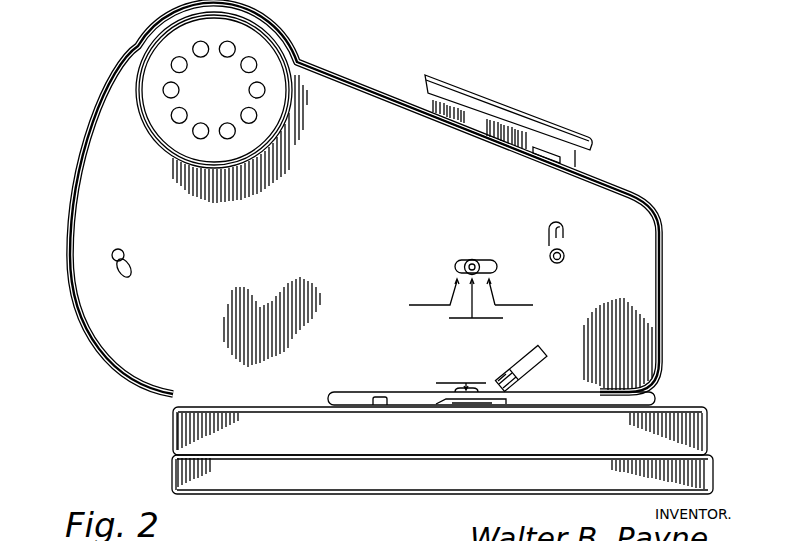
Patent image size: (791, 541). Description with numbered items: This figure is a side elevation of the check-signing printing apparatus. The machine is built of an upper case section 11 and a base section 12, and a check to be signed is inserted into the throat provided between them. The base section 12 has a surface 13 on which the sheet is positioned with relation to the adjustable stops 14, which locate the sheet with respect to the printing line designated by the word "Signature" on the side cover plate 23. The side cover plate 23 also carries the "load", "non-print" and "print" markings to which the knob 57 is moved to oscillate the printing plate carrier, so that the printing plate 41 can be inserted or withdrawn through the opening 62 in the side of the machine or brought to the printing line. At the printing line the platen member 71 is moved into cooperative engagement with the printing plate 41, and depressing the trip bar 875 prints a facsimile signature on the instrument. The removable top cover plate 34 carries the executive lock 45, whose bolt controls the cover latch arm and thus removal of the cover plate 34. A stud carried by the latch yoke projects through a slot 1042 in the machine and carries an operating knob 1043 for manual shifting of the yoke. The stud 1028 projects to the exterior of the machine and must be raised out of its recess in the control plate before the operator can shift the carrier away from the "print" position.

The side cover plate 23 is at (364, 198).
The removable top cover plate 34 is at (620, 186).
The upper case section 11 is at (661, 318).
The surface 13 is at (643, 408).
The base section 12 is at (703, 428).
The trip bar 875 is at (505, 110).
The executive lock 45 is at (546, 152).
The knob 57 is at (474, 262).
The slot 1042 is at (560, 233).
The operating knob 1043 is at (565, 260).
The stud 1028 is at (111, 258).
The adjustable stops 14 is at (384, 396).
The printing plate 41 is at (513, 384).
The opening 62 is at (542, 352).
The platen member 71 is at (473, 404).